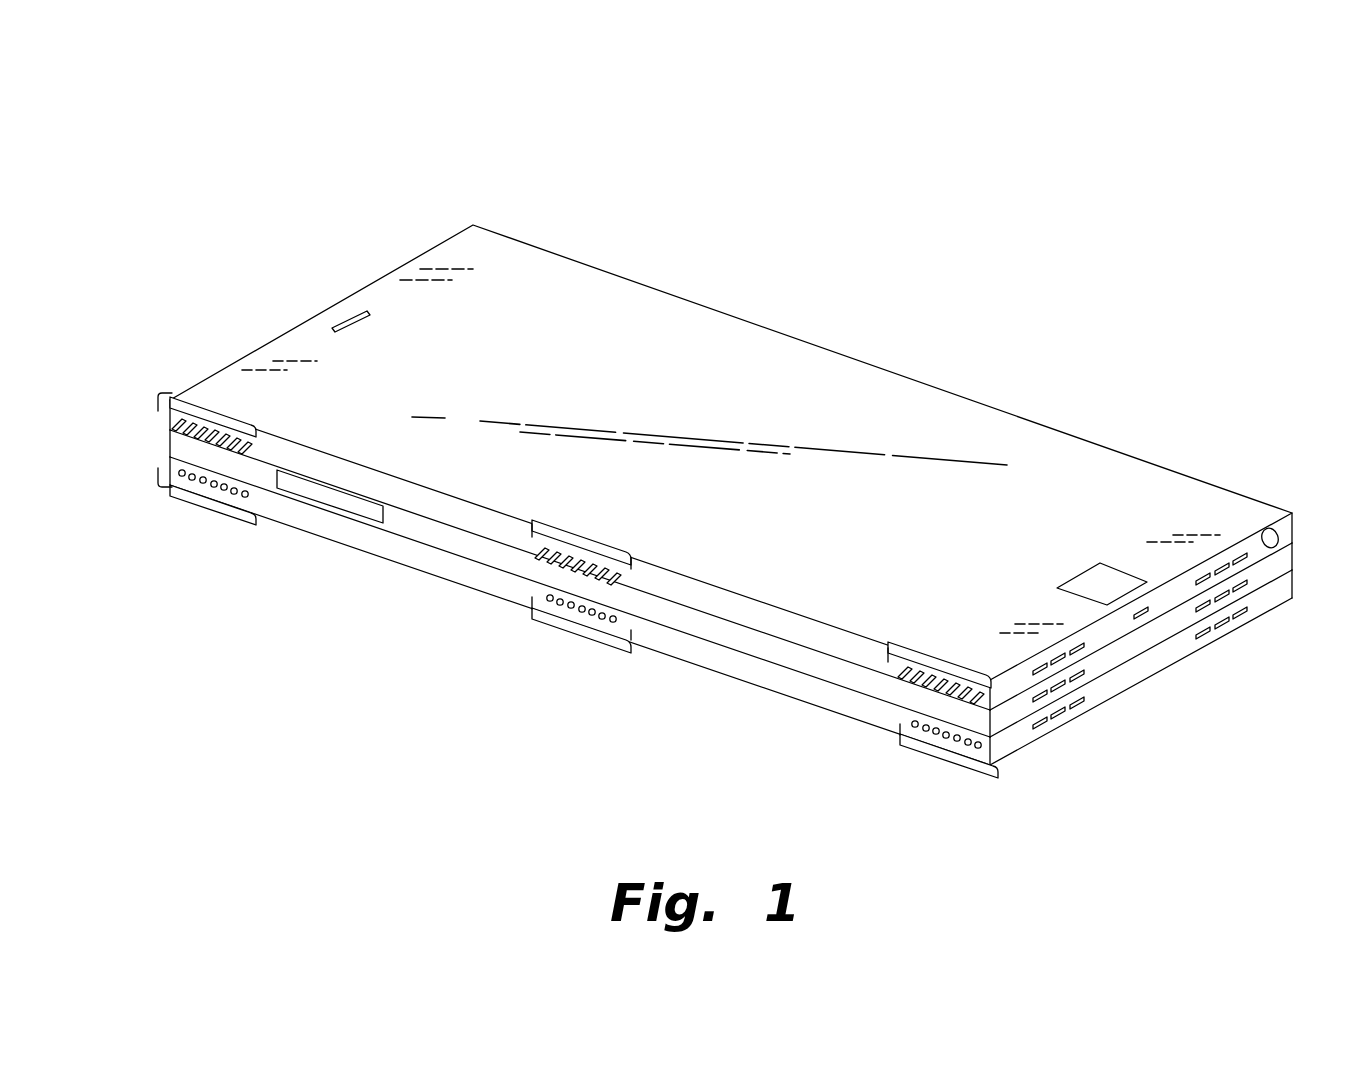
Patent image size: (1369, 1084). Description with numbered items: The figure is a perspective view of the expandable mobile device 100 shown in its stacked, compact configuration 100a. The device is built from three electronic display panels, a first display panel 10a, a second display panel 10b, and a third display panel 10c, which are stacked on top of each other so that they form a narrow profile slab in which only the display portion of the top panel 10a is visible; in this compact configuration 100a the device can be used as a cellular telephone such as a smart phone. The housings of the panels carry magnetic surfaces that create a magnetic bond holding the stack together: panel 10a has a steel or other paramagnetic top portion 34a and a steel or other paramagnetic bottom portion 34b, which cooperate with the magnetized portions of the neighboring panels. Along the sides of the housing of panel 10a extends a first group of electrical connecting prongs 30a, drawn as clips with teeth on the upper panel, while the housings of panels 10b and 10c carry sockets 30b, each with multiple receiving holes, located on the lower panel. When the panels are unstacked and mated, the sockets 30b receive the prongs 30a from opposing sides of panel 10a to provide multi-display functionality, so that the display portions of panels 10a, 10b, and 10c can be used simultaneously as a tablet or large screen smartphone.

The compact configuration 100a is at (717, 425).
The expandable mobile device 100 is at (731, 498).
The first display panel 10a is at (812, 534).
The second display panel 10b is at (753, 643).
The third display panel 10c is at (835, 698).
The electrical connecting prongs 30a is at (213, 405).
The sockets 30b is at (207, 495).
The paramagnetic top portion 34a is at (395, 303).
The paramagnetic bottom portion 34b is at (1215, 517).